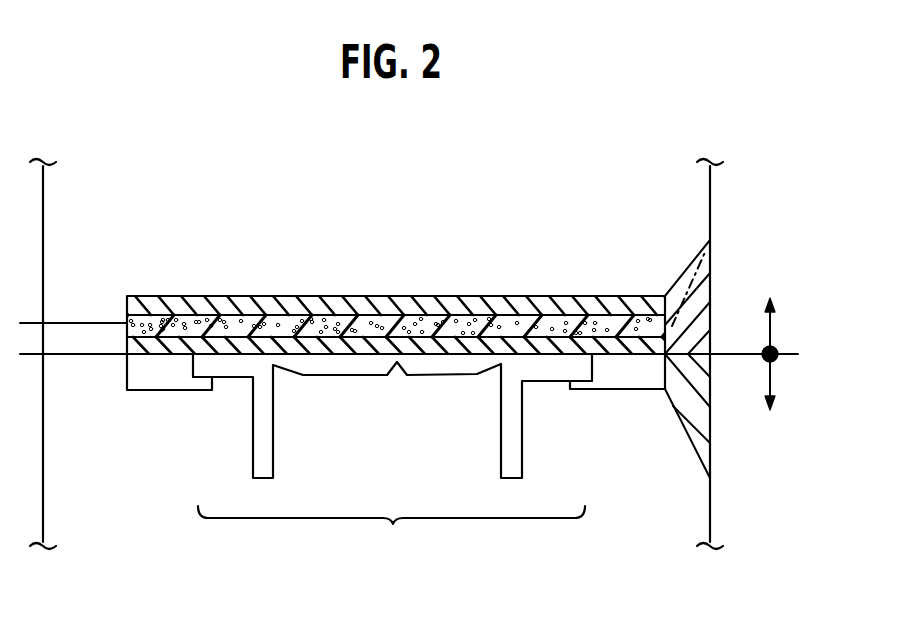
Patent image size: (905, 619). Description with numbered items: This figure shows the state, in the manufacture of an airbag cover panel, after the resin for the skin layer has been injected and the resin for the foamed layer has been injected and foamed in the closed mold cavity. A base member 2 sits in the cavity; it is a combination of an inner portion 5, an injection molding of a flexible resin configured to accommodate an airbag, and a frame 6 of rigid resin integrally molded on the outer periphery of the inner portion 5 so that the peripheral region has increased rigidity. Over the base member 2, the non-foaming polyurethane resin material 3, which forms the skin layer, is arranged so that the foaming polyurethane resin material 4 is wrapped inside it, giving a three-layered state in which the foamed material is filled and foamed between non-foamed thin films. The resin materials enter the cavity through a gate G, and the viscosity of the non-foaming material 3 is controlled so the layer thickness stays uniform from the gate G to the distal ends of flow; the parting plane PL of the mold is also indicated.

The base member 2 is at (391, 537).
The non-foaming polyurethane resin material 3 is at (582, 343).
The foaming polyurethane resin material 4 is at (361, 322).
The inner portion 5 is at (268, 438).
The frame 6 is at (165, 382).
The gate G is at (81, 323).
The parting line PL is at (750, 354).